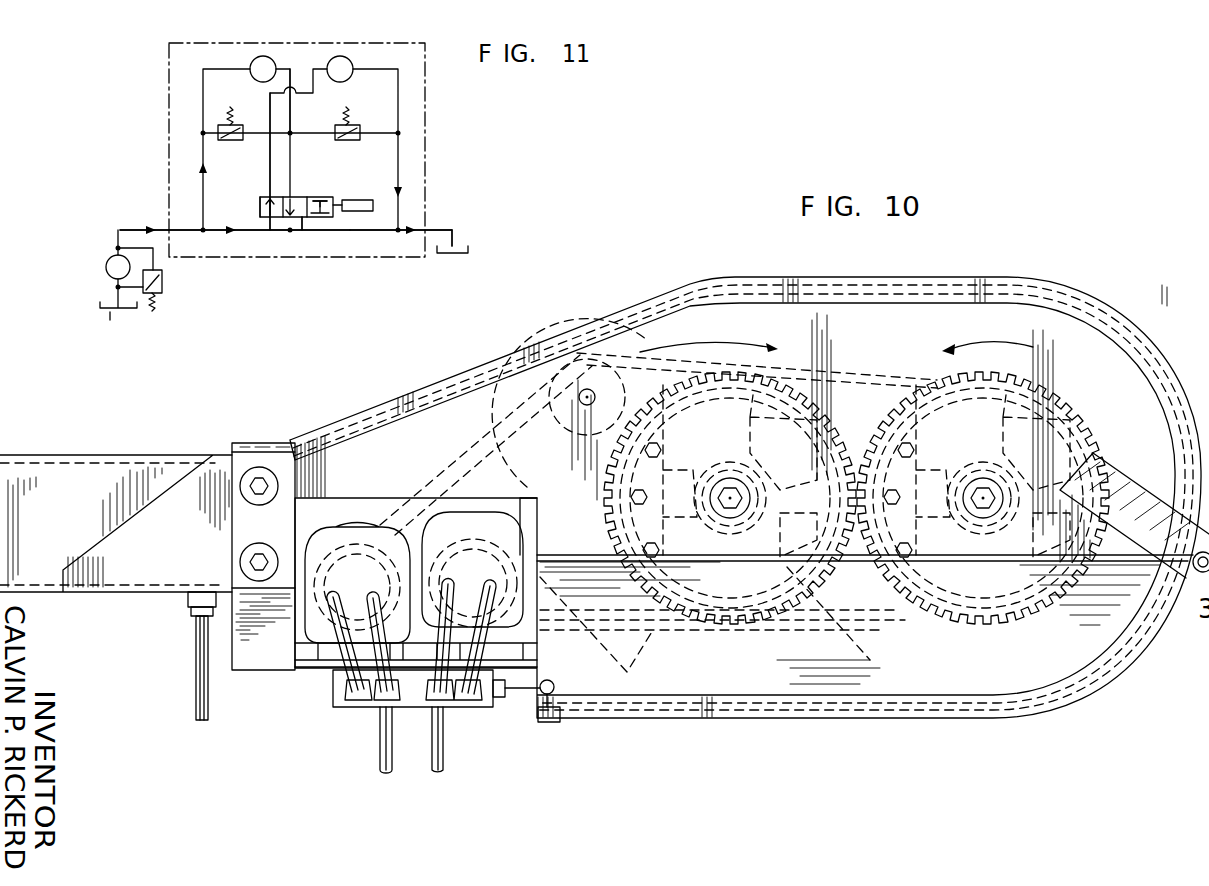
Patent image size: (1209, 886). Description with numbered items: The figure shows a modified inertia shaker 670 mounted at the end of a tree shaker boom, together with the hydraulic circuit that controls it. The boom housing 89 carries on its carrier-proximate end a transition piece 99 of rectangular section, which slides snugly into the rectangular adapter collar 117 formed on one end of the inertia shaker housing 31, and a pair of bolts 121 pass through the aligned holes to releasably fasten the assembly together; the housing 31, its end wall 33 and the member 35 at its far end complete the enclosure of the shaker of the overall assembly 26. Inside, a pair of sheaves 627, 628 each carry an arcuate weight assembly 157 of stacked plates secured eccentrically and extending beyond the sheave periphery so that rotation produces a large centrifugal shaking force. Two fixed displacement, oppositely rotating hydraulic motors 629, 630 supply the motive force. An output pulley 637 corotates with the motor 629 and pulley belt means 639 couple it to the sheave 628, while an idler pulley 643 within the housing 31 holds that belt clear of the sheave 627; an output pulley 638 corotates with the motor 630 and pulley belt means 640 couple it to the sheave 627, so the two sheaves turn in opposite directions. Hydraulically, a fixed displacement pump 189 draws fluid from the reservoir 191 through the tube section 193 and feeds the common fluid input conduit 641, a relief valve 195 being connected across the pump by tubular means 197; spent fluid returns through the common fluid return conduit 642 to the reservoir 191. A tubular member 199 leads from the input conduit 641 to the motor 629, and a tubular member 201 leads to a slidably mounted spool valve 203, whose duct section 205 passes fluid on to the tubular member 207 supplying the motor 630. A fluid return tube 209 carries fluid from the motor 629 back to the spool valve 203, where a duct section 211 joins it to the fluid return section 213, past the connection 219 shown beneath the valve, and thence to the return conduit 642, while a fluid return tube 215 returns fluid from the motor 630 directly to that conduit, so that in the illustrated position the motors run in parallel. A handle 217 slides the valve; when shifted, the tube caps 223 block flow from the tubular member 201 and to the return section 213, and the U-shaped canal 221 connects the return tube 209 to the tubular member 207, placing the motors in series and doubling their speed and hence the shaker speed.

In FIG. 10, the cutting head assembly 26 is at (116, 564).
In FIG. 10, the boom housing 89 is at (45, 455).
In FIG. 10, the transition piece 99 is at (190, 556).
In FIG. 10, the adapter collar 117 is at (262, 443).
In FIG. 10, the bolts 121 is at (259, 490).
In FIG. 10, the inertia shaker housing 31 is at (418, 388).
In FIG. 10, the housing end wall 33 is at (1120, 368).
In FIG. 10, the cutter bar 35 is at (1147, 503).
In FIG. 10, the weight assembly 157 is at (638, 330).
In FIG. 10, the sheave 627 is at (705, 410).
In FIG. 10, the sheave 628 is at (990, 410).
In FIG. 11, the hydraulic motor 629 is at (265, 56).
In FIG. 10, the hydraulic motor 629 is at (350, 527).
In FIG. 11, the hydraulic motor 630 is at (348, 56).
In FIG. 10, the hydraulic motor 630 is at (465, 513).
In FIG. 10, the output pulley 637 is at (337, 525).
In FIG. 10, the output pulley 638 is at (540, 537).
In FIG. 10, the pulley belt means 639 is at (525, 380).
In FIG. 10, the pulley belt means 640 is at (560, 425).
In FIG. 10, the idler pulley 643 is at (580, 360).
In FIG. 10, the inertia shaker 670 is at (1042, 280).
In FIG. 11, the tubular member 199 is at (203, 108).
In FIG. 10, the tubular member 199 is at (360, 631).
In FIG. 11, the fluid return tube 215 is at (398, 107).
In FIG. 10, the fluid return tube 215 is at (465, 624).
In FIG. 11, the spool valve 203 is at (314, 197).
In FIG. 10, the spool valve 203 is at (343, 710).
In FIG. 11, the duct section 205 is at (260, 207).
In FIG. 11, the tubular member 207 is at (270, 157).
In FIG. 11, the fluid return tube 209 is at (292, 68).
In FIG. 10, the fluid return tube 209 is at (345, 655).
In FIG. 11, the duct section 211 is at (283, 198).
In FIG. 11, the U-shaped canal 221 is at (325, 197).
In FIG. 11, the tube caps 223 is at (303, 218).
In FIG. 11, the handle 217 is at (368, 202).
In FIG. 10, the handle 217 is at (520, 700).
In FIG. 11, the fluid input conduit 641 is at (130, 230).
In FIG. 10, the fluid input conduit 641 is at (380, 770).
In FIG. 11, the fluid return conduit 642 is at (440, 232).
In FIG. 10, the fluid return conduit 642 is at (445, 770).
In FIG. 11, the tubular means 197 is at (118, 247).
In FIG. 11, the hydraulic pump 189 is at (106, 268).
In FIG. 11, the relief valve 195 is at (163, 283).
In FIG. 11, the tube section 193 is at (100, 307).
In FIG. 11, the reservoir 191 is at (112, 312).
In FIG. 11, the tubular member 201 is at (250, 232).
In FIG. 11, the return line 219 is at (322, 232).
In FIG. 11, the fluid return section 213 is at (348, 232).